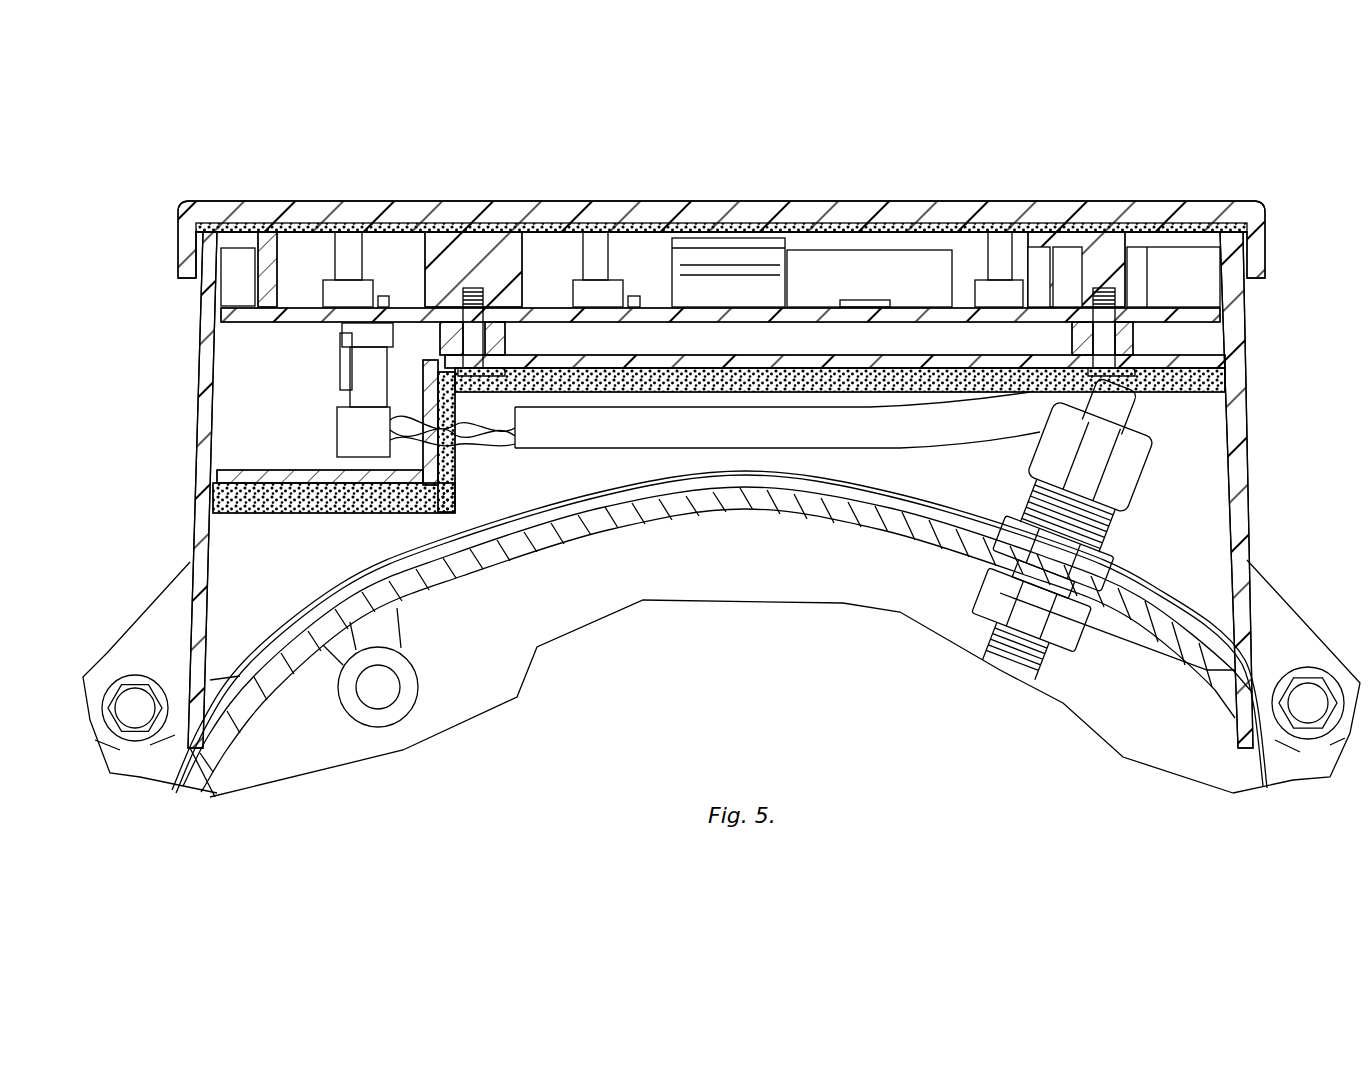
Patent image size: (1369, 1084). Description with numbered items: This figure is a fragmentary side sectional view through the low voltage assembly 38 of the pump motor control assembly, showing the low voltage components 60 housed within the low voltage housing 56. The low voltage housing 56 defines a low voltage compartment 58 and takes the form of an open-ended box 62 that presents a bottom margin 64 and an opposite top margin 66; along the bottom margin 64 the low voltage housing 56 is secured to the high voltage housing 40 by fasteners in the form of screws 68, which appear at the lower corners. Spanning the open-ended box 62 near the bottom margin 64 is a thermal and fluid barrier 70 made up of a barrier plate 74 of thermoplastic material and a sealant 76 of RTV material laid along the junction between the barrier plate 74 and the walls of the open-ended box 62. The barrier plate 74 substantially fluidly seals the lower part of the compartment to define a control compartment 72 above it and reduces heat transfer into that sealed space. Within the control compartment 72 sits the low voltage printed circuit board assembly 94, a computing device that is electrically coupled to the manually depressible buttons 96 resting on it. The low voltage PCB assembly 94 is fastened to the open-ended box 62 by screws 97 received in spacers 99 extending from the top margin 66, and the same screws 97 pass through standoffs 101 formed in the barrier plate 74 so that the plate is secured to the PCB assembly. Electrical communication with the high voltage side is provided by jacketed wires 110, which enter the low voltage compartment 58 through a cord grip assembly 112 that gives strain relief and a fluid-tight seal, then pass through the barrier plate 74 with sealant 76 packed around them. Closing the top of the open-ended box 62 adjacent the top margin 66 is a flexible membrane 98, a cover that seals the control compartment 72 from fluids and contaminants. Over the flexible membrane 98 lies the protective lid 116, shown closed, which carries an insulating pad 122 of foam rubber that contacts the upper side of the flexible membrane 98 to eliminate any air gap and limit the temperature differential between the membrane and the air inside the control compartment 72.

The low voltage assembly 38 is at (1232, 185).
The high voltage housing 40 is at (460, 552).
The low voltage housing 56 is at (1240, 493).
The low voltage compartment 58 is at (1193, 408).
The low voltage components 60 is at (306, 286).
The open-ended box 62 is at (207, 432).
The bottom margin 64 is at (213, 688).
The top margin 66 is at (200, 241).
The screws 68 is at (133, 697).
The thermal and fluid barrier 70 is at (600, 377).
The control compartment 72 is at (263, 347).
The barrier plate 74 is at (692, 357).
The sealant 76 is at (457, 463).
The low voltage printed circuit board assembly 94 is at (863, 313).
The manually depressible buttons 96 is at (350, 258).
The screws 97 is at (473, 333).
The flexible membrane 98 is at (470, 262).
The spacers 99 is at (1119, 242).
The standoffs 101 is at (490, 337).
The jacketed wires 110 is at (893, 427).
The cord grip assembly 112 is at (1113, 497).
The protective lid 116 is at (765, 205).
The insulating pad 122 is at (900, 232).